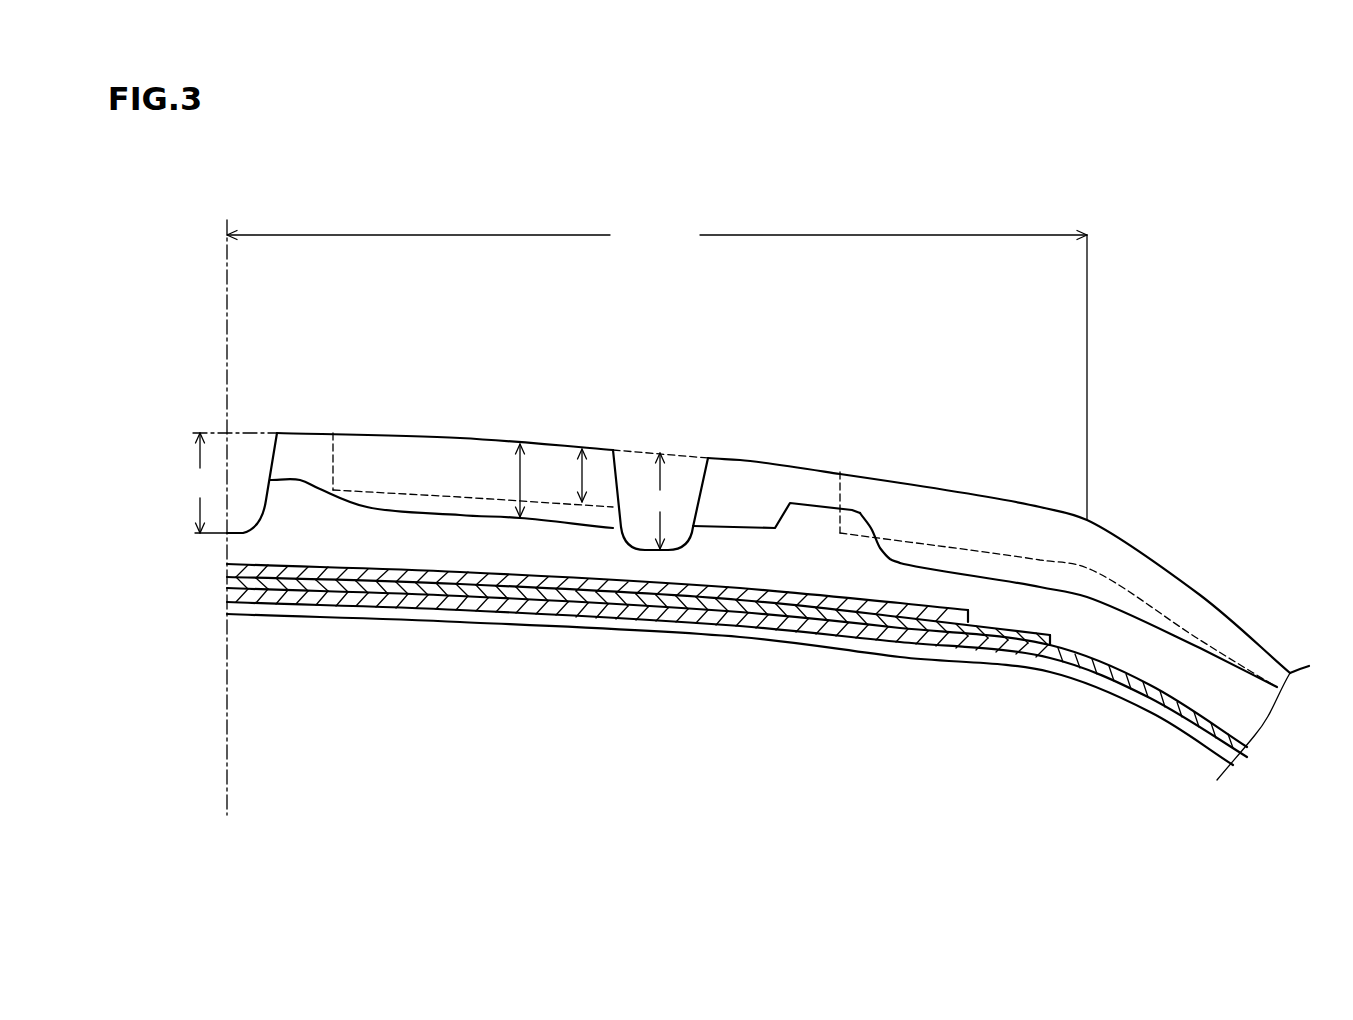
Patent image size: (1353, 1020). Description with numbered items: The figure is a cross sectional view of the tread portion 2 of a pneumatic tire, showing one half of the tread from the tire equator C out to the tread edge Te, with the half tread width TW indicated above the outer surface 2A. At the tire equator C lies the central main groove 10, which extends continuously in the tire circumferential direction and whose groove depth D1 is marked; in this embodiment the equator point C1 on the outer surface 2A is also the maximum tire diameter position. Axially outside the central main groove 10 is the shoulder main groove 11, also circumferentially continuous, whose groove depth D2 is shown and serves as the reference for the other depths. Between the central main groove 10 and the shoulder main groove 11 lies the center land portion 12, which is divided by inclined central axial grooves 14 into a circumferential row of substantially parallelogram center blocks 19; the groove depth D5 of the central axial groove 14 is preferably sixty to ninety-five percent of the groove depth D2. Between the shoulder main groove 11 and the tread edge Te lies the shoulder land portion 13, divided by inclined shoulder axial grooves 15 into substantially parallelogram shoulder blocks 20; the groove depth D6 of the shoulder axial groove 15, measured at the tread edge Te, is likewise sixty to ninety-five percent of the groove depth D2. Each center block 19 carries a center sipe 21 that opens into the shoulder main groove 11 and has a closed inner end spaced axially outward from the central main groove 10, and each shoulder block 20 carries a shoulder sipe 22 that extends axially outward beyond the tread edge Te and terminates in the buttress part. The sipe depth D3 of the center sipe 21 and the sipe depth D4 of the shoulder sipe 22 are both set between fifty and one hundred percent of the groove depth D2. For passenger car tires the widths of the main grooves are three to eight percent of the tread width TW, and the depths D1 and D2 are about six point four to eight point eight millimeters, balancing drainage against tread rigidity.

The tread portion 2 is at (1000, 539).
The outer surface 2A is at (759, 456).
The central main groove 10 is at (249, 472).
The shoulder main groove 11 is at (633, 481).
The center land portion 12 is at (441, 415).
The center block 19 is at (441, 415).
The shoulder land portion 13 is at (985, 514).
The shoulder block 20 is at (985, 514).
The central axial groove 14 is at (468, 509).
The shoulder axial groove 15 is at (903, 559).
The center sipe 21 is at (382, 489).
The shoulder sipe 22 is at (975, 547).
The tire equator C is at (225, 505).
The equator point C1 is at (225, 432).
The tread edge Te is at (1088, 519).
The tread width TW is at (657, 371).
The groove depth of the central main groove D1 is at (205, 483).
The groove depth of the shoulder main groove D2 is at (660, 501).
The sipe depth of the center sipe D3 is at (581, 447).
The sipe depth of the shoulder sipe D4 is at (1070, 567).
The groove depth of the central axial groove D5 is at (520, 480).
The groove depth of the shoulder axial groove D6 is at (1066, 588).